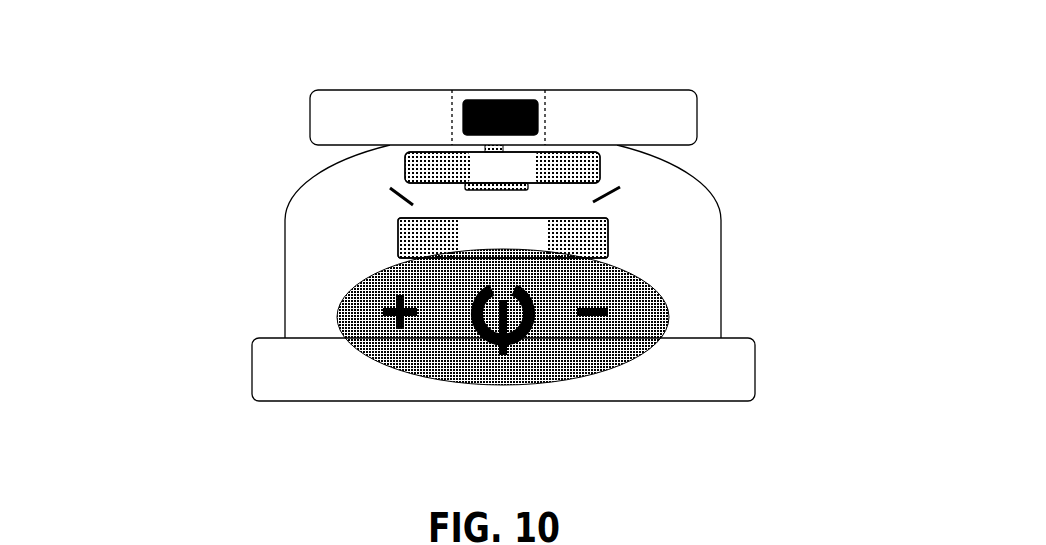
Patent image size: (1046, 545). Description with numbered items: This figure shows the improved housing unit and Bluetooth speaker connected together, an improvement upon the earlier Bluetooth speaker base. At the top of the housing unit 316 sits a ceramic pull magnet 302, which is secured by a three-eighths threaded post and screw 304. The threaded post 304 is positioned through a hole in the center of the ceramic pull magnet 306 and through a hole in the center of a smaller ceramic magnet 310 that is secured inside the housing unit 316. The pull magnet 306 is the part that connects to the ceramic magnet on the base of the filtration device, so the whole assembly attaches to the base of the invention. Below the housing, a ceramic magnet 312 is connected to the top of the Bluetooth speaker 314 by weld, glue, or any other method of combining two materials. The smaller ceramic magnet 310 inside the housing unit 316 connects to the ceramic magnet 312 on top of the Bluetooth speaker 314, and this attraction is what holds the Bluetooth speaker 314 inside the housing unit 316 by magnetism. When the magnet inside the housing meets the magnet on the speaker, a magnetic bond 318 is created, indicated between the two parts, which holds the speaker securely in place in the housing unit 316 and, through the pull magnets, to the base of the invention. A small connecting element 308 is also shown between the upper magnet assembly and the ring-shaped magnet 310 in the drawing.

The 501b ceramic pull magnet 302 is at (327, 108).
The threaded post and screw 304 is at (492, 98).
The 501b ceramic pull magnet 306 is at (538, 97).
The connecting stem 308 is at (503, 147).
The ceramic magnet 310 is at (420, 172).
The ceramic magnet 312 is at (575, 232).
The Bluetooth speaker 314 is at (370, 315).
The housing unit 316 is at (717, 371).
The magnetic bond 318 is at (392, 202).